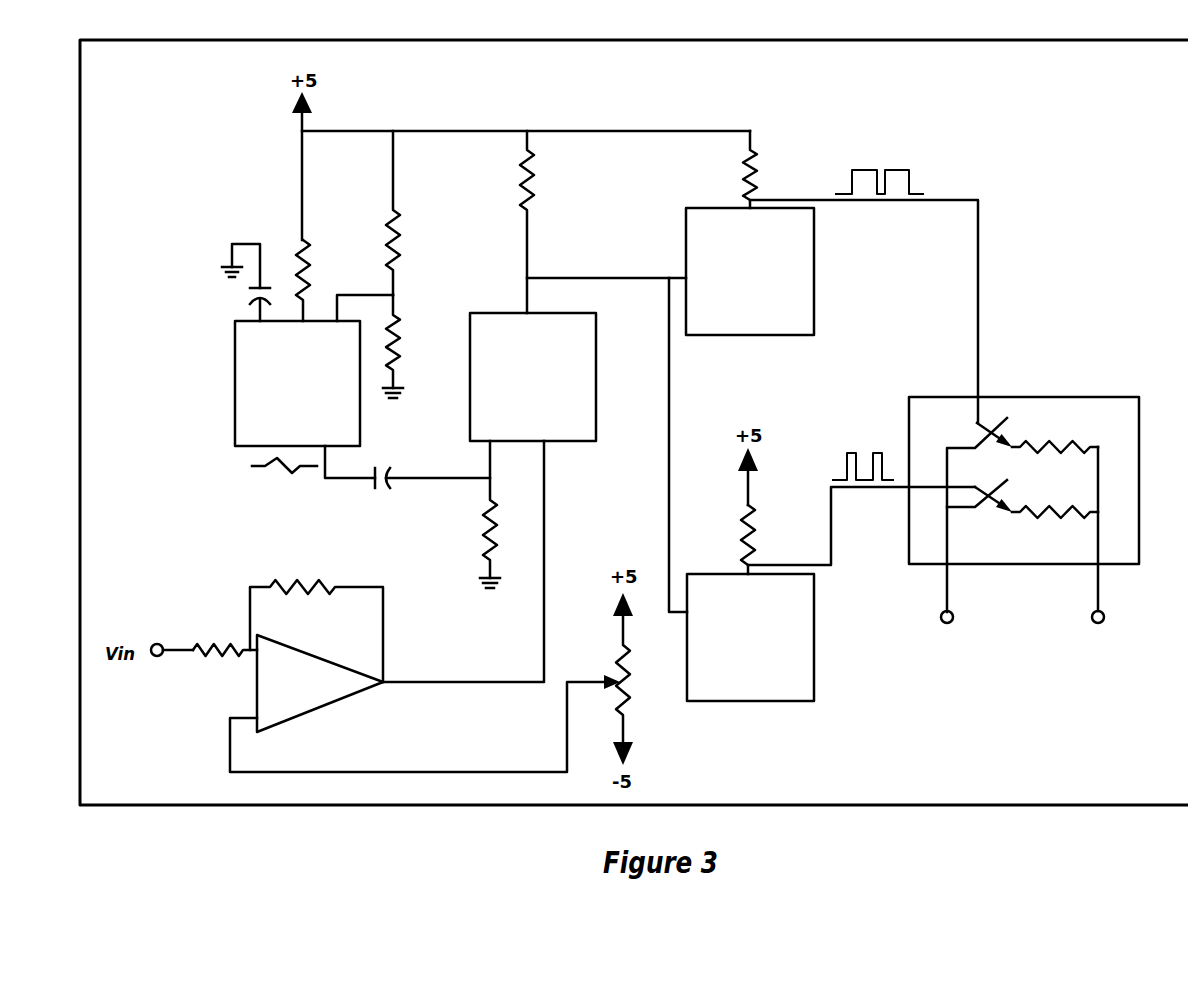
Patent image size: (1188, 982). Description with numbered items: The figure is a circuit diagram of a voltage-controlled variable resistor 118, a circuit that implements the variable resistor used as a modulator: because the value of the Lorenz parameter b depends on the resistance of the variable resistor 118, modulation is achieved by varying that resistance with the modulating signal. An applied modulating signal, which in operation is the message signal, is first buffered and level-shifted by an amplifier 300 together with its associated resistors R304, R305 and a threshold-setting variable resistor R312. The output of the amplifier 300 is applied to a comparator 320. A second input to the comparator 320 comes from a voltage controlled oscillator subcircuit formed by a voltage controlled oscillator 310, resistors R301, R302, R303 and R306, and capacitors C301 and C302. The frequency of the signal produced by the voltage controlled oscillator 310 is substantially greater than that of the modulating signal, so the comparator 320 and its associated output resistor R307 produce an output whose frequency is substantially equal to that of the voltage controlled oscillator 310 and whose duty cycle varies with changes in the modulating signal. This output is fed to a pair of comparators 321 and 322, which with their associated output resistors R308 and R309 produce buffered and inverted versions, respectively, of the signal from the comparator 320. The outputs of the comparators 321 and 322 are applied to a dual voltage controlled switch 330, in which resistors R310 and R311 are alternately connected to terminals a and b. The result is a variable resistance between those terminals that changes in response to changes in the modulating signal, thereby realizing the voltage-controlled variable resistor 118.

The voltage-controlled variable resistor 118 is at (1031, 811).
The amplifier 300 is at (320, 684).
The voltage controlled oscillator 310 is at (297, 397).
The comparator 320 is at (533, 377).
The comparator 321 is at (750, 271).
The comparator 322 is at (750, 637).
The dual voltage controlled switch 330 is at (1024, 504).
The resistor R301 is at (326, 276).
The resistor R302 is at (421, 213).
The resistor R303 is at (420, 346).
The resistor R304 is at (220, 665).
The resistor R305 is at (316, 615).
The resistor R306 is at (461, 514).
The output resistor R307 is at (556, 222).
The output resistor R308 is at (781, 169).
The output resistor R309 is at (778, 539).
The resistor R310 is at (1055, 461).
The resistor R311 is at (1055, 525).
The threshold-setting variable resistor R312 is at (593, 680).
The capacitor C301 is at (229, 282).
The capacitor C302 is at (426, 495).